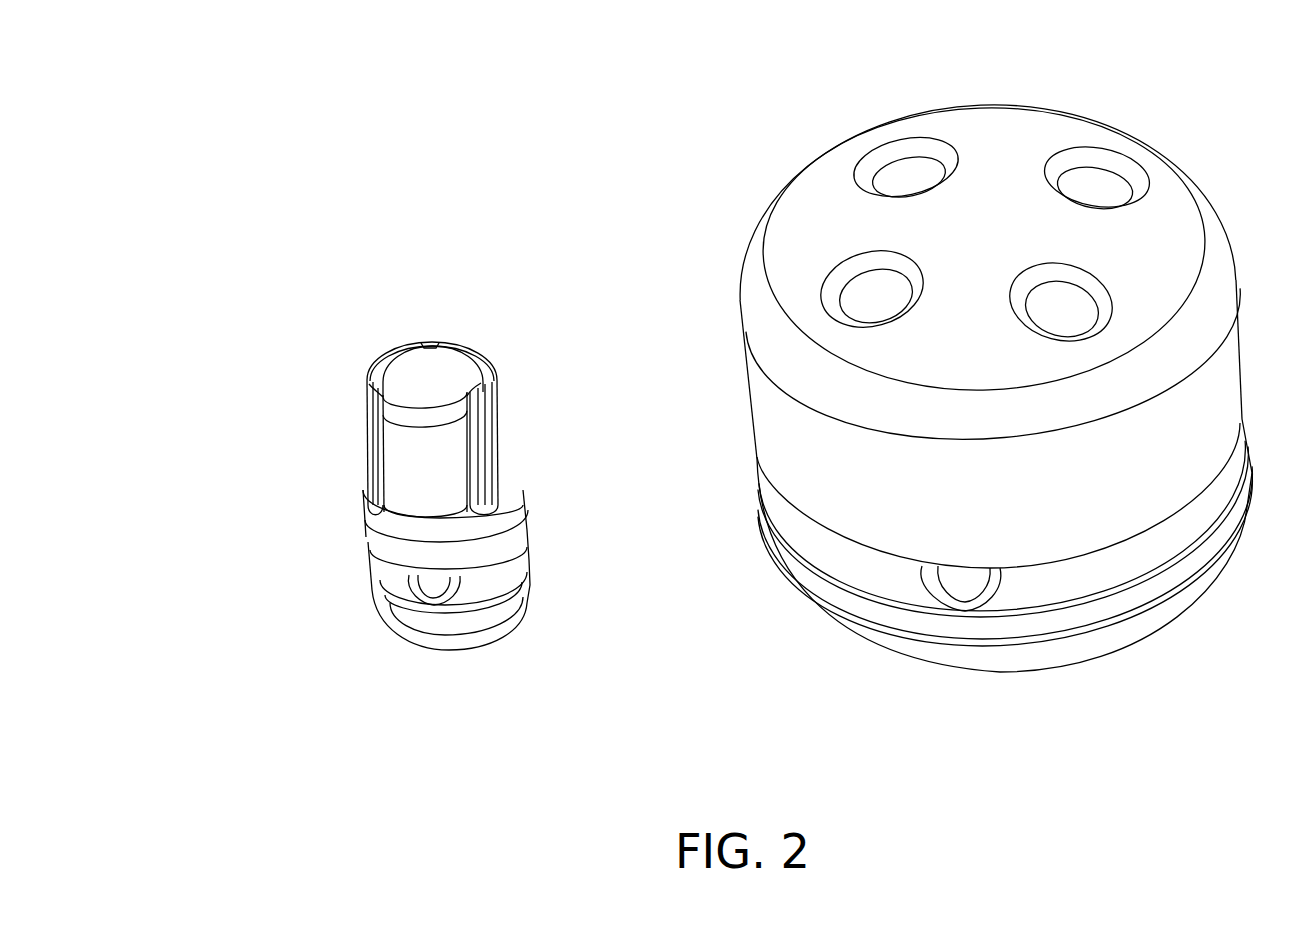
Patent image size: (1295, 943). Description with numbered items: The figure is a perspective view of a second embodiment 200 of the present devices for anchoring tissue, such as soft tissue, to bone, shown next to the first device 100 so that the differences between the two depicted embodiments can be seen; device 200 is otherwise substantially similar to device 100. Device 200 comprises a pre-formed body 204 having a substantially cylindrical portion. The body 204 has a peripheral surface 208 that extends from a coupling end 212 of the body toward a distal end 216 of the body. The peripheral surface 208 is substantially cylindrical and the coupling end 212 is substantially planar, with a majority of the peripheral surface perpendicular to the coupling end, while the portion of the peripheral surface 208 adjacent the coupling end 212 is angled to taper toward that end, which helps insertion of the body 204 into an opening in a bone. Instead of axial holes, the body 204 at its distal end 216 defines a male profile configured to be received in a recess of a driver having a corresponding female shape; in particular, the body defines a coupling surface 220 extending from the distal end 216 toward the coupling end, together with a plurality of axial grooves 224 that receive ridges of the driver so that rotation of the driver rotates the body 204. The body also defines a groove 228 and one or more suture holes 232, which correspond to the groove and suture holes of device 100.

The device 100 is at (804, 67).
The second embodiment 200 is at (222, 242).
The pre-formed body 204 is at (528, 593).
The peripheral surface 208 is at (390, 537).
The coupling end 212 is at (482, 643).
The distal end 216 is at (460, 363).
The coupling surface 220 is at (415, 463).
The axial grooves 224 is at (424, 334).
The groove 228 is at (383, 568).
The suture holes 232 is at (430, 585).